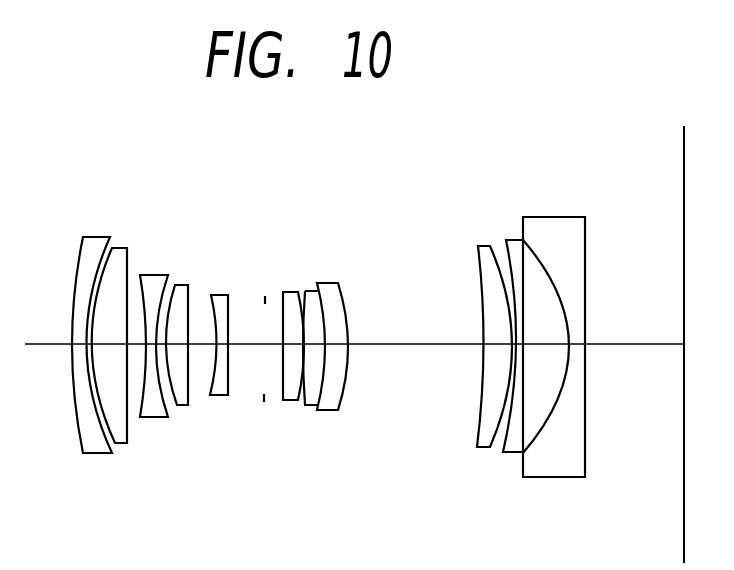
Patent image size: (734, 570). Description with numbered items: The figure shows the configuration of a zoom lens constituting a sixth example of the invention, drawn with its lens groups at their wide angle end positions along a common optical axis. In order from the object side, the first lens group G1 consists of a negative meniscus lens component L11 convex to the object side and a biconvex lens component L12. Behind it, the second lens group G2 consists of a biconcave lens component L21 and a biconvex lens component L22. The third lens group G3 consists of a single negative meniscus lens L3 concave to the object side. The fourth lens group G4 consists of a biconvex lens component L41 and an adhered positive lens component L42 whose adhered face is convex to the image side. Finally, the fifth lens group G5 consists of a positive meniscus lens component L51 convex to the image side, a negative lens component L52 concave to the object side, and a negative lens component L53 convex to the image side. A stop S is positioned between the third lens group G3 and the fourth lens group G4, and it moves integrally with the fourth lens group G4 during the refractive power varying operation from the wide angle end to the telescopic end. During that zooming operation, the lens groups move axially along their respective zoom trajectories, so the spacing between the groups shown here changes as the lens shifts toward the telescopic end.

The negative meniscus lens component L11 is at (78, 266).
The biconvex lens component L12 is at (126, 262).
The biconcave lens component L21 is at (157, 275).
The biconvex lens component L22 is at (182, 285).
The negative meniscus lens L3 is at (222, 295).
The biconvex lens component L41 is at (288, 292).
The adhered positive lens component L42 is at (329, 284).
The positive meniscus lens component L51 is at (482, 246).
The negative lens component L52 is at (513, 240).
The negative lens component L53 is at (565, 217).
The stop S is at (265, 295).
The first lens group G1 is at (77, 352).
The second lens group G2 is at (180, 347).
The third lens group G3 is at (234, 356).
The fourth lens group G4 is at (323, 356).
The fifth lens group G5 is at (519, 345).